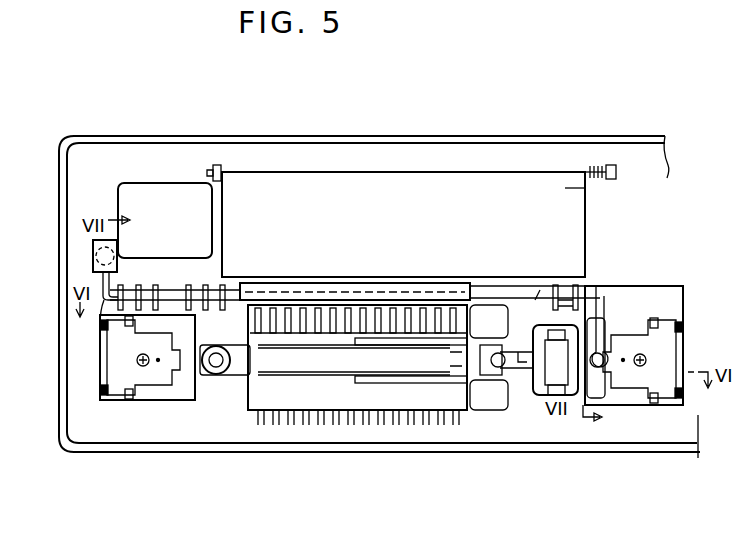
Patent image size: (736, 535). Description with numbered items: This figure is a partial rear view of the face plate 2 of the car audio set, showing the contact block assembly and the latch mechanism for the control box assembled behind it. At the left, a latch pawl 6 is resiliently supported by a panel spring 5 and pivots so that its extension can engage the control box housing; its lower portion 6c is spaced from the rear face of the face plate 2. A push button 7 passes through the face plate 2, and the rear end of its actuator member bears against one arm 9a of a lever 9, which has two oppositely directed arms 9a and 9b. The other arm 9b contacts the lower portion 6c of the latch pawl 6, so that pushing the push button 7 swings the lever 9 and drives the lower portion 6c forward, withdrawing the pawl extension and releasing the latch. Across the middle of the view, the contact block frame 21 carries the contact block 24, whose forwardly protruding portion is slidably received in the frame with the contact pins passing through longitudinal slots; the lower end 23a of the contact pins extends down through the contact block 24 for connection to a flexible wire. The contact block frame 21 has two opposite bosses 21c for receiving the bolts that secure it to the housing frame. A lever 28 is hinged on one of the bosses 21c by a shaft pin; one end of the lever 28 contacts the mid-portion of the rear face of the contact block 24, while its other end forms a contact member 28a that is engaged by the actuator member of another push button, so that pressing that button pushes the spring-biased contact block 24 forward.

The face plate 2 is at (134, 136).
The panel spring 5 is at (140, 370).
The latch pawl 6 is at (648, 316).
The lower portion of the latch pawl 6c is at (165, 400).
The push button 7 is at (93, 246).
The lever 9 is at (535, 300).
The arm of the lever 9a is at (105, 300).
The arm of the lever 9b is at (600, 400).
The contact block frame 21 is at (378, 405).
The bosses 21c is at (216, 376).
The lower end of the contact pins 23a is at (305, 426).
The contact block 24 is at (268, 425).
The lever 28 is at (367, 380).
The contact member 28a is at (545, 396).